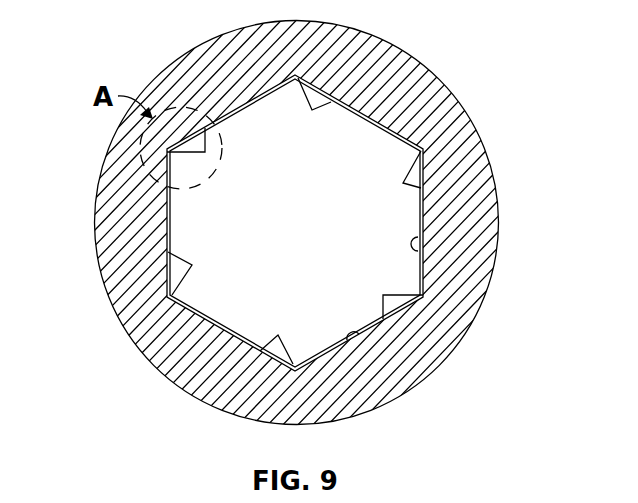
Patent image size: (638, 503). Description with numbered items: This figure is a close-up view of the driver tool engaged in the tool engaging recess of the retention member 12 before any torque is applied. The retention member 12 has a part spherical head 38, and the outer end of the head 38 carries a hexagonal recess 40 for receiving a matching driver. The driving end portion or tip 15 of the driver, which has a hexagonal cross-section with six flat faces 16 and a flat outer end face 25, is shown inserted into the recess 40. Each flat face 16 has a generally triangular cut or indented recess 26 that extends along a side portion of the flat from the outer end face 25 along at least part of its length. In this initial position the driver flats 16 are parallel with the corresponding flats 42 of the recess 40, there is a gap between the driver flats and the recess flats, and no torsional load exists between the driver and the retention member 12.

The retention member 12 is at (450, 365).
The driving end portion 15 is at (194, 211).
The flat faces 16 is at (417, 236).
The flat outer end face 25 is at (311, 237).
The indented recess 26 is at (411, 178).
The part spherical head 38 is at (118, 250).
The hexagonal recess 40 is at (436, 192).
The flats of recess 42 is at (257, 92).